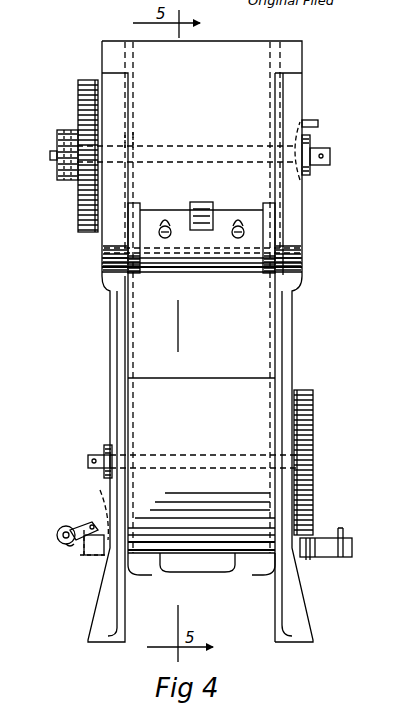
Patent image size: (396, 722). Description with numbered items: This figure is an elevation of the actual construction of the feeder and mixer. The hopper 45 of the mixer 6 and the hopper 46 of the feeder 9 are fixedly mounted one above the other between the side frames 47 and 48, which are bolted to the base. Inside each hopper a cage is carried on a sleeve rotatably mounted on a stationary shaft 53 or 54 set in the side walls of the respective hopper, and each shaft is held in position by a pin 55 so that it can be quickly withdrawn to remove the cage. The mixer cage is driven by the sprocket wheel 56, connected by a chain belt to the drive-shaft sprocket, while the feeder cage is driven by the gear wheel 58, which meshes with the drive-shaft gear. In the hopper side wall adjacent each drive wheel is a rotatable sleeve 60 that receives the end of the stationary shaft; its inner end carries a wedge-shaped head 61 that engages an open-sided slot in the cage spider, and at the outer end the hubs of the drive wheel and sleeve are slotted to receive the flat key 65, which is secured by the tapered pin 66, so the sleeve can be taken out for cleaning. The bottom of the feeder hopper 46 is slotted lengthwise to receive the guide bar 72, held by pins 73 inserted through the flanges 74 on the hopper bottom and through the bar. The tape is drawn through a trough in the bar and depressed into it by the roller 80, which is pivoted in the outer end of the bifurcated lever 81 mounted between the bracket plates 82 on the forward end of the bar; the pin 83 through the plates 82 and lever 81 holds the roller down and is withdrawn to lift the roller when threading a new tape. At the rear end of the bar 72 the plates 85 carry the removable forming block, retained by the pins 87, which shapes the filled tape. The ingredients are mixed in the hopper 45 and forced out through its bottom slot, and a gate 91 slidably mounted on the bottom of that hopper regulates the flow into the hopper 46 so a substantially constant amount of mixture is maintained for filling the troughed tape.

The mixer 6 is at (306, 90).
The feeder 9 is at (316, 398).
The hopper 45 is at (189, 341).
The hopper 46 is at (203, 465).
The side frame 47 is at (108, 598).
The side frame 48 is at (297, 600).
The shaft 53 is at (327, 153).
The shaft 54 is at (88, 462).
The pin 55 is at (312, 123).
The sprocket wheel 56 is at (85, 92).
The gear wheel 58 is at (307, 496).
The sleeve 60 is at (120, 141).
The wedge-shaped head 61 is at (137, 139).
The flat key 65 is at (50, 155).
The tapered pin 66 is at (65, 129).
The guide bar 72 is at (104, 508).
The pin 73 is at (153, 553).
The flange 74 is at (222, 553).
The roller 80 is at (57, 536).
The bifurcated lever 81 is at (70, 545).
The bracket plate 82 is at (97, 556).
The pin 83 is at (90, 519).
The plate 85 is at (326, 549).
The pin 87 is at (341, 538).
The gate 91 is at (180, 221).